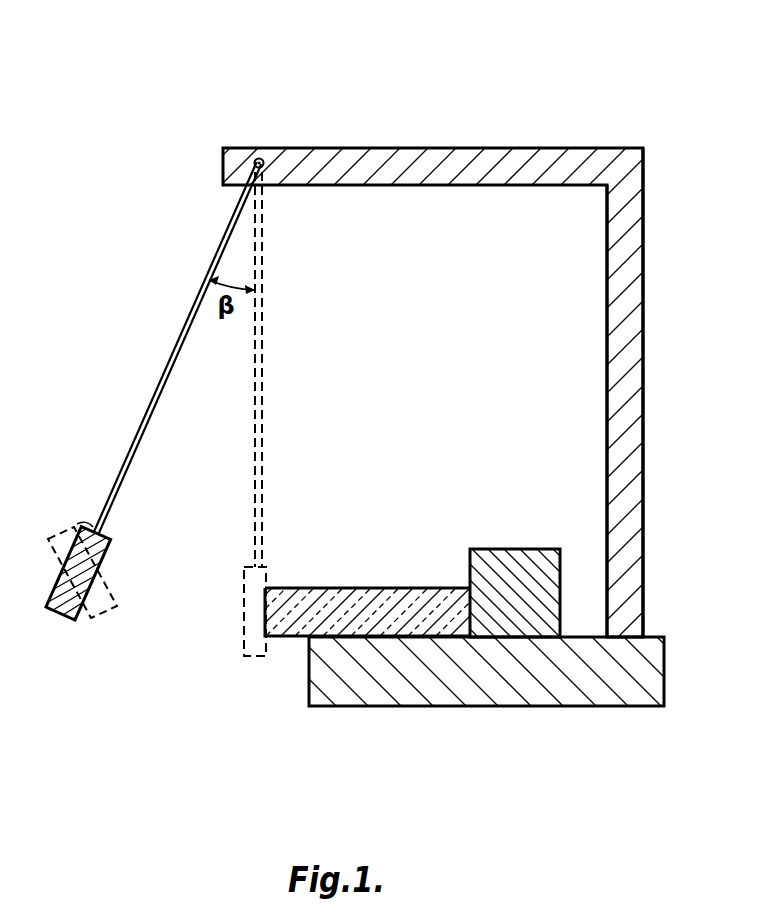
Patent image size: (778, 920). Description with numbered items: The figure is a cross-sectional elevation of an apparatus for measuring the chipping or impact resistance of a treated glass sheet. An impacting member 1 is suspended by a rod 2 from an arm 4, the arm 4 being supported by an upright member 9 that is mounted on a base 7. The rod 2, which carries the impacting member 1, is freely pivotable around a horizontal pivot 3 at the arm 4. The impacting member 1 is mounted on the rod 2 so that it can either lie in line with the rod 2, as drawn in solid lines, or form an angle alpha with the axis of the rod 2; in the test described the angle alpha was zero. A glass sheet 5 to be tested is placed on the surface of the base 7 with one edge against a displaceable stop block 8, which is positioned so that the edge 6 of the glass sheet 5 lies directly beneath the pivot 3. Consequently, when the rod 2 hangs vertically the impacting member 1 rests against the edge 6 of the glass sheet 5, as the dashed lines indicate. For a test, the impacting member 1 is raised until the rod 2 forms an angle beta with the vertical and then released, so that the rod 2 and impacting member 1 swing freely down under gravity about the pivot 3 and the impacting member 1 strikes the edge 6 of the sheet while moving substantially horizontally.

The impacting member 1 is at (80, 614).
The rod 2 is at (175, 357).
The horizontal pivot 3 is at (259, 160).
The arm 4 is at (455, 165).
The glass sheet 5 is at (303, 618).
The edge 6 is at (268, 608).
The base 7 is at (507, 665).
The displaceable stop block 8 is at (507, 565).
The upright member 9 is at (618, 375).